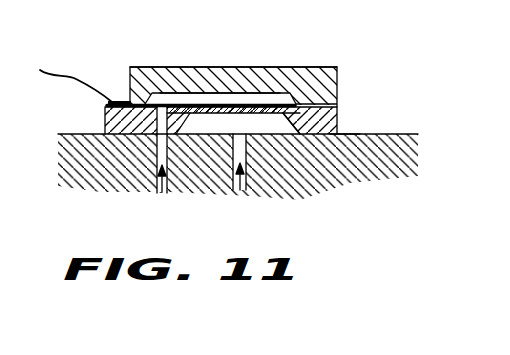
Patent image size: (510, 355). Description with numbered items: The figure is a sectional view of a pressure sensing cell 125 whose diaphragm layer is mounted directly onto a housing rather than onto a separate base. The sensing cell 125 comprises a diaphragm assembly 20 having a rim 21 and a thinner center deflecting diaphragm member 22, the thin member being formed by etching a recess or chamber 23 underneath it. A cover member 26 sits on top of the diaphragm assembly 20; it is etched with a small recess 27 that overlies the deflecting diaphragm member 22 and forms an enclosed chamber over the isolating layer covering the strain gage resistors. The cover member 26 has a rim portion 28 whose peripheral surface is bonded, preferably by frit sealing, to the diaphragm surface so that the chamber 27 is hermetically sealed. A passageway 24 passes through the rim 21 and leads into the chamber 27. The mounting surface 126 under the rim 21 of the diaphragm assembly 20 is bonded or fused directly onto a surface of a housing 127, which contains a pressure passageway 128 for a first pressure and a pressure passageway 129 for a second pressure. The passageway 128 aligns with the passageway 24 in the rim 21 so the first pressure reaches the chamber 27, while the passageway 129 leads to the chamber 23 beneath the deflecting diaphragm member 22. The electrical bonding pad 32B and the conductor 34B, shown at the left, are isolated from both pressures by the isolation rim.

The diaphragm assembly 20 is at (337, 108).
The rim 21 is at (337, 137).
The deflecting diaphragm member 22 is at (212, 100).
The recess or chamber 23 is at (262, 123).
The passageway 24 is at (163, 108).
The cover member 26 is at (337, 70).
The recess or chamber 27 is at (228, 93).
The rim portion 28 is at (337, 93).
The bonding pad 32B is at (118, 100).
The conductor 34B is at (72, 62).
The sensing cell 125 is at (303, 67).
The mounting surface 126 is at (303, 134).
The housing 127 is at (340, 168).
The pressure passageway 128 is at (157, 159).
The pressure passageway 129 is at (233, 163).